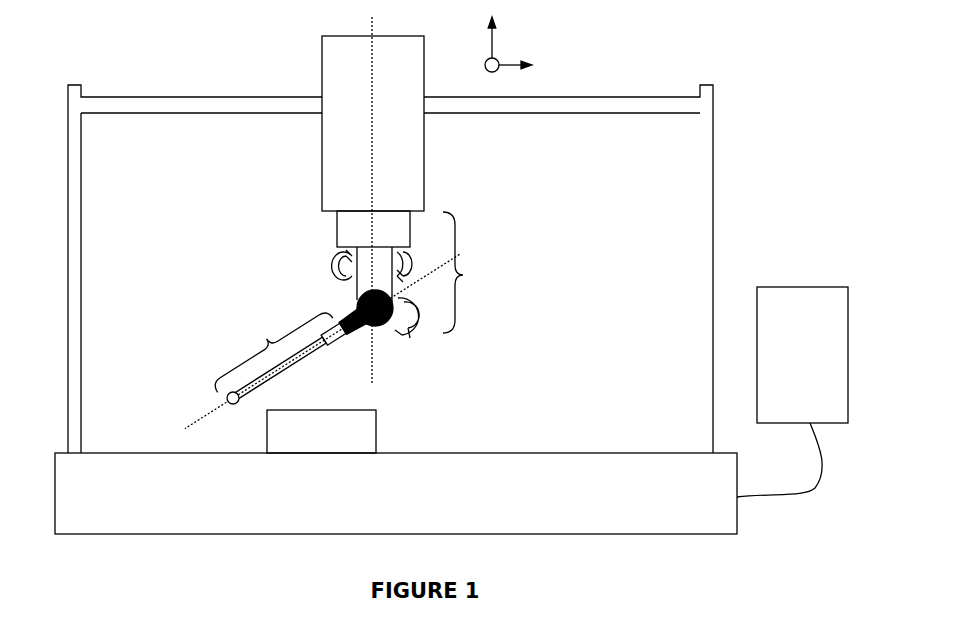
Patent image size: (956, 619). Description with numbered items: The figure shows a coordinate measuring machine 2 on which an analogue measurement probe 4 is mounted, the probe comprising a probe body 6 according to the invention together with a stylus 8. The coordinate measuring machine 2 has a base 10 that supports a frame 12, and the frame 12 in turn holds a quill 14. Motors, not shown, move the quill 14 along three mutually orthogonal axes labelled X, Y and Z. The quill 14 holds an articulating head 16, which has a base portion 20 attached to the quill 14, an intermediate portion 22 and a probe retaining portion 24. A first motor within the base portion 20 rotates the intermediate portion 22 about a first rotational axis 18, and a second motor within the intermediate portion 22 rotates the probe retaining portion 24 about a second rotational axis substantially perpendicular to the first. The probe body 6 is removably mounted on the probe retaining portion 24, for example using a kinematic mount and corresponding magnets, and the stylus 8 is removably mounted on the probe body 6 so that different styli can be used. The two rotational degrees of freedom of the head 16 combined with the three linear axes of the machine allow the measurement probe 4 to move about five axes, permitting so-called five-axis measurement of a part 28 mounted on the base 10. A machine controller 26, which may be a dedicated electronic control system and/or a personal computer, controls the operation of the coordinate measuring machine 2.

The coordinate measuring machine 2 is at (451, 275).
The analogue measurement probe 4 is at (322, 341).
The probe body 6 is at (349, 347).
The stylus 8 is at (249, 407).
The base 10 is at (396, 493).
The frame 12 is at (88, 122).
The quill 14 is at (373, 123).
The articulating head 16 is at (471, 272).
The first rotational axis 18 is at (357, 18).
The base portion 20 is at (352, 233).
The intermediate portion 22 is at (366, 268).
The probe retaining portion 24 is at (350, 312).
The machine controller 26 is at (792, 392).
The part 28 is at (321, 431).